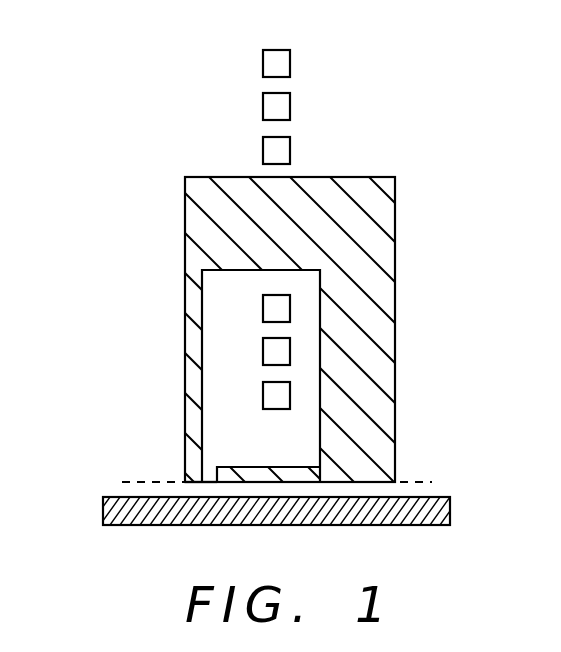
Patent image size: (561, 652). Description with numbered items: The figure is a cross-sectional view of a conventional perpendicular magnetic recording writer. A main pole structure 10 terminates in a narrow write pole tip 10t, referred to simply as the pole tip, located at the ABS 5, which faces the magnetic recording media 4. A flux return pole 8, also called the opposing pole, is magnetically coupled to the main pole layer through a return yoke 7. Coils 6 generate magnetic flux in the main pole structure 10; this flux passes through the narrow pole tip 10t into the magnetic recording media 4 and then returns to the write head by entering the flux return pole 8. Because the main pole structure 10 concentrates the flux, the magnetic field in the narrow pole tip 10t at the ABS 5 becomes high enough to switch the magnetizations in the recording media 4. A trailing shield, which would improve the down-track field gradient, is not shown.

The magnetic recording media 4 is at (114, 506).
The ABS 5 is at (277, 484).
The coils 6 is at (277, 307).
The return yoke 7 is at (378, 359).
The flux return pole 8 is at (293, 471).
The main pole structure 10 is at (190, 456).
The write pole tip 10t is at (193, 484).